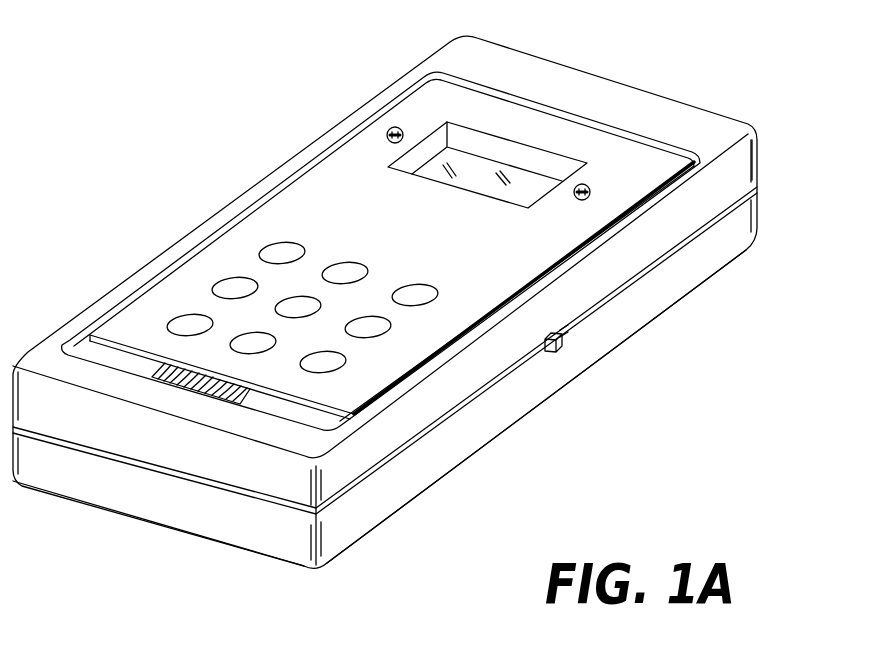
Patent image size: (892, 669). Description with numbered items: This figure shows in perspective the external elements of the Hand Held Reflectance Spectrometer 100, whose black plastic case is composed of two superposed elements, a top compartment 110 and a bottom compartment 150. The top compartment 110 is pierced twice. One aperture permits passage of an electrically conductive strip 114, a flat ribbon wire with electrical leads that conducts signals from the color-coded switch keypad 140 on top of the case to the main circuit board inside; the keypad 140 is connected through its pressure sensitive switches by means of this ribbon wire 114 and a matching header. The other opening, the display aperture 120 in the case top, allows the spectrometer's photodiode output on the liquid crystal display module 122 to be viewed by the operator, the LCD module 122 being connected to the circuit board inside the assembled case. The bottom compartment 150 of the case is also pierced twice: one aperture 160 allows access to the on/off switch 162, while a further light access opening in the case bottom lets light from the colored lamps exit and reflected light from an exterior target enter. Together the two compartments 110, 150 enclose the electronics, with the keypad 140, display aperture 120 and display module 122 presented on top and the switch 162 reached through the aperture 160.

The reflectance spectrometer 100 is at (600, 44).
The top compartment 110 is at (678, 213).
The electrically conductive strip 114 is at (218, 403).
The display aperture 120 is at (490, 206).
The liquid crystal display module 122 is at (468, 172).
The color-coded switch keypad 140 is at (212, 278).
The bottom compartment 150 is at (194, 390).
The aperture 160 is at (567, 328).
The on/off switch 162 is at (560, 345).